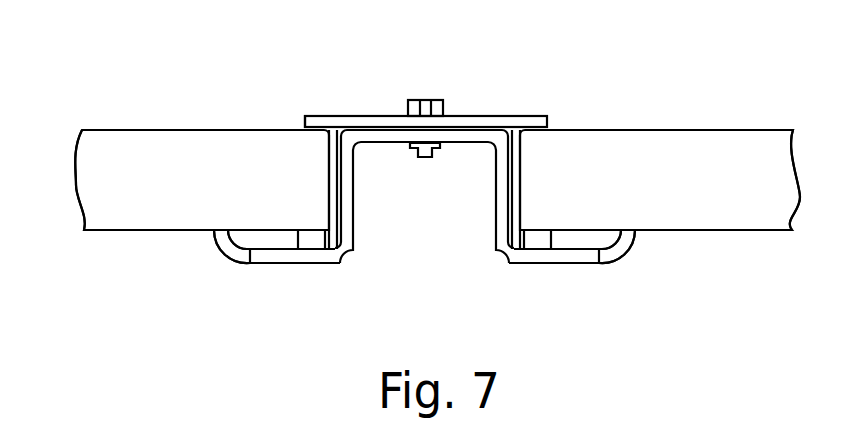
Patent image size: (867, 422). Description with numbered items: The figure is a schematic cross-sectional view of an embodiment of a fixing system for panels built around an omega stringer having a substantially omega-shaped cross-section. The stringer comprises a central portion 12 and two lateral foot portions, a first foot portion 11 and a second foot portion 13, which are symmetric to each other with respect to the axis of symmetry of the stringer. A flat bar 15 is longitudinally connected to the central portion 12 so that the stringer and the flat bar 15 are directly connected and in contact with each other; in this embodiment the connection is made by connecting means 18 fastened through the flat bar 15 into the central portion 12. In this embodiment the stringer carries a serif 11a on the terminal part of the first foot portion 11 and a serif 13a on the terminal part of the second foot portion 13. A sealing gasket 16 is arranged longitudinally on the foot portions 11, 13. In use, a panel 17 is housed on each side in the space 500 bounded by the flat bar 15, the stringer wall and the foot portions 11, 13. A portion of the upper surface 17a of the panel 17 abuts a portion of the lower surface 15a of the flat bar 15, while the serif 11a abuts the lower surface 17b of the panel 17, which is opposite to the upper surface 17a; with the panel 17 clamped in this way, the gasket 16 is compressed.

The space 500 is at (413, 138).
The first foot portion 11 is at (277, 255).
The serif 11a is at (235, 253).
The central portion 12 is at (462, 143).
The second foot portion 13 is at (587, 257).
The serif 13a is at (628, 240).
The flat bar 15 is at (538, 124).
The lower surface 15a is at (313, 116).
The sealing gasket 16 is at (322, 255).
The panel 17 is at (200, 144).
The upper surface 17a is at (105, 129).
The lower surface 17b is at (745, 230).
The connecting means 18 is at (449, 92).